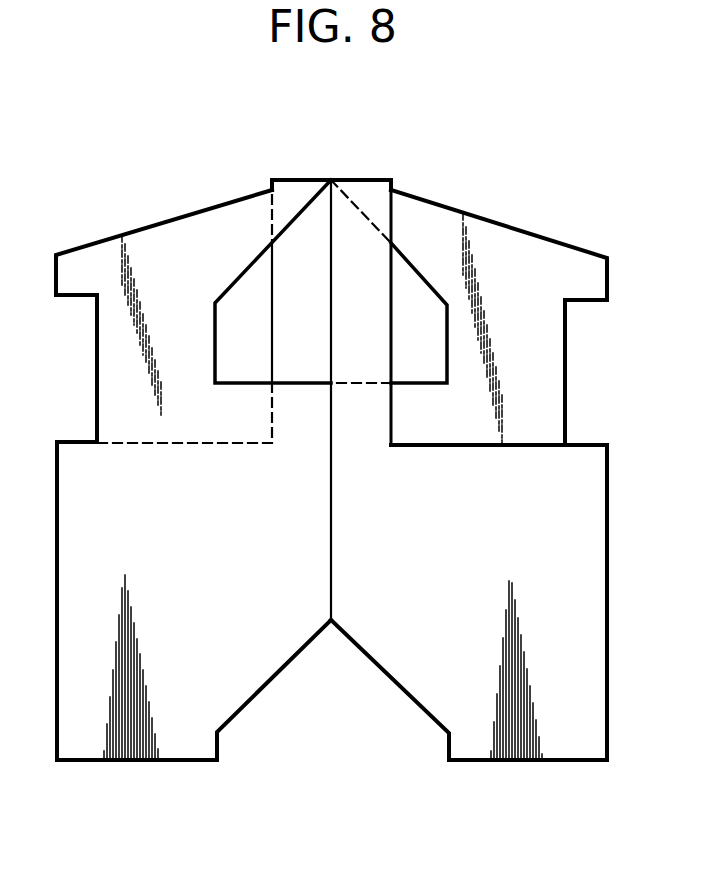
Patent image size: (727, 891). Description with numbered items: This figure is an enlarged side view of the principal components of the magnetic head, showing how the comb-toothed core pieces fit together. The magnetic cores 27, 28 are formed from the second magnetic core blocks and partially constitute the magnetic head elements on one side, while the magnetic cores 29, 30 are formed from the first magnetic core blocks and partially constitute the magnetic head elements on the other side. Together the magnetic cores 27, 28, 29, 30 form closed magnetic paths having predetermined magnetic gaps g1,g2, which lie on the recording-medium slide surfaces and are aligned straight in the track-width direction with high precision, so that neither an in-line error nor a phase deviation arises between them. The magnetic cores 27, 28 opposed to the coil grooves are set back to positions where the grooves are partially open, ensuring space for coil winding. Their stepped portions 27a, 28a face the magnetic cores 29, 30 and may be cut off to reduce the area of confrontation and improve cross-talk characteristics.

The magnetic core 27 is at (363, 280).
The magnetic core 28 is at (287, 263).
The magnetic core 29 is at (88, 262).
The magnetic core 30 is at (557, 263).
The stepped portion 27a is at (582, 442).
The stepped portion 28a is at (82, 440).
The magnetic gaps g1,g2 is at (333, 178).